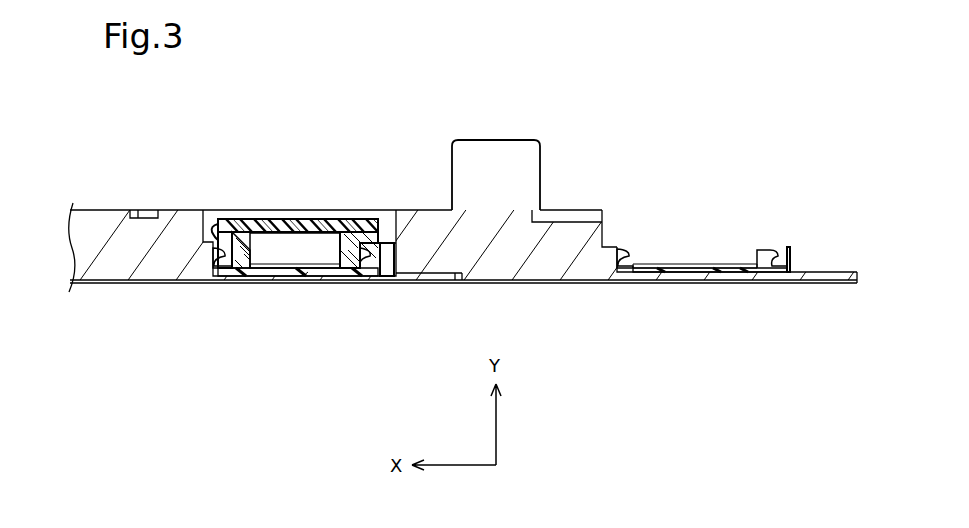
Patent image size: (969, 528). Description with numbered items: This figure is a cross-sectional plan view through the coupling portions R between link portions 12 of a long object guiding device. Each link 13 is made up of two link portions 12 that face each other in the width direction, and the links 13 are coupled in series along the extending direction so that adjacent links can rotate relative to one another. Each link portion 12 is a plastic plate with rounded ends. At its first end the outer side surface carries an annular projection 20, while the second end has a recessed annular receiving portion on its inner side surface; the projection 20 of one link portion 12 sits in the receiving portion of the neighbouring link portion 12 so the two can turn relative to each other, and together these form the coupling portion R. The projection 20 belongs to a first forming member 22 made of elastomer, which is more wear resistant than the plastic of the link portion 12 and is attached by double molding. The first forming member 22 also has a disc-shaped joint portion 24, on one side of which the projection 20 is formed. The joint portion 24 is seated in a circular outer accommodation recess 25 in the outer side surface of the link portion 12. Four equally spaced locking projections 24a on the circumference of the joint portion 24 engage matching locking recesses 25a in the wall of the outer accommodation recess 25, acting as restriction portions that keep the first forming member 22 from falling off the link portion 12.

The link portion 12 is at (150, 283).
The link 13 is at (108, 296).
The projection 20 is at (341, 281).
The first forming member 22 is at (355, 226).
The joint portion 24 is at (316, 220).
The locking projection 24a is at (390, 226).
The outer accommodation recess 25 is at (285, 228).
The locking recess 25a is at (222, 223).
The coupling portion R is at (313, 296).